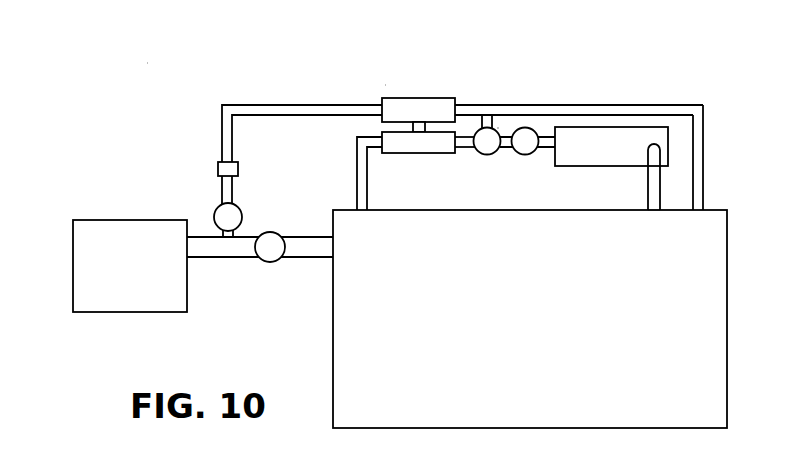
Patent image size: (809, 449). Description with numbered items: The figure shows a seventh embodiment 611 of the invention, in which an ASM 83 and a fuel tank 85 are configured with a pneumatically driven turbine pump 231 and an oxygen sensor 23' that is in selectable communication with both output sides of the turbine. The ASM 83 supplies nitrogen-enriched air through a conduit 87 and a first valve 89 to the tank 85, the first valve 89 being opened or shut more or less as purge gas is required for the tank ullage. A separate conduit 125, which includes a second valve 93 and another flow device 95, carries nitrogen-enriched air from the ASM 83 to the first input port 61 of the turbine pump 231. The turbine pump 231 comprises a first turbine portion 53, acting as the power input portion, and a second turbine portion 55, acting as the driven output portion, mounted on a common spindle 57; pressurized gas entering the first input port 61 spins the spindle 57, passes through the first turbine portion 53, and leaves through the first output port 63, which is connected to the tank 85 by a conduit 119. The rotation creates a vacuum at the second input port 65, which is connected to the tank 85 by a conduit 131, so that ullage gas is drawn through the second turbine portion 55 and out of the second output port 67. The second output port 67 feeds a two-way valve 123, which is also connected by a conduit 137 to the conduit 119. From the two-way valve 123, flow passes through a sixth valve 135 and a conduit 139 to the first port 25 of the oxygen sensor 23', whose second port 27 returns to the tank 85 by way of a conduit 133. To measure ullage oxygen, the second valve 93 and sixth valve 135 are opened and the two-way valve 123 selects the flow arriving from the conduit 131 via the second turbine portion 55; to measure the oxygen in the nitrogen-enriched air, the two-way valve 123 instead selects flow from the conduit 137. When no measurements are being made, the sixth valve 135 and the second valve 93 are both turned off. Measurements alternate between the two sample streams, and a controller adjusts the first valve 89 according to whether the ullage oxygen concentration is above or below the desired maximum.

The seventh embodiment 611 is at (138, 58).
The turbine pump 231 is at (376, 78).
The conduit 125 is at (267, 106).
The first input port 61 is at (365, 102).
The first turbine portion 53 is at (437, 97).
The spindle 57 is at (412, 126).
The second turbine portion 55 is at (443, 156).
The conduit 131 is at (358, 172).
The second input port 65 is at (372, 150).
The second output port 67 is at (463, 152).
The first output port 63 is at (473, 103).
The conduit 137 is at (498, 127).
The two-way valve 123 is at (503, 130).
The conduit 139 is at (510, 127).
The sixth valve 135 is at (527, 155).
The first port 25 is at (543, 148).
The oxygen sensor 23' is at (612, 116).
The second port 27 is at (643, 160).
The conduit 133 is at (662, 187).
The conduit 119 is at (683, 106).
The fuel tank 85 is at (713, 208).
The flow device 95 is at (218, 165).
The second valve 93 is at (215, 210).
The ASM 83 is at (130, 220).
The conduit 87 is at (212, 262).
The first valve 89 is at (268, 262).